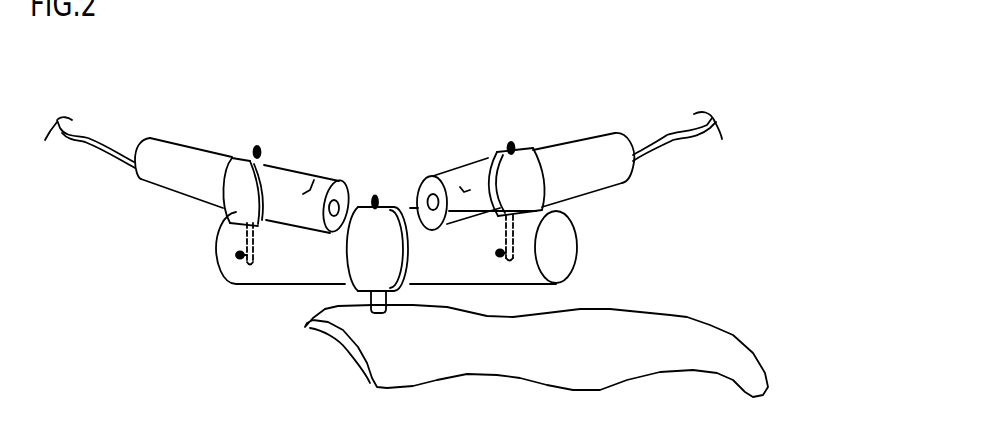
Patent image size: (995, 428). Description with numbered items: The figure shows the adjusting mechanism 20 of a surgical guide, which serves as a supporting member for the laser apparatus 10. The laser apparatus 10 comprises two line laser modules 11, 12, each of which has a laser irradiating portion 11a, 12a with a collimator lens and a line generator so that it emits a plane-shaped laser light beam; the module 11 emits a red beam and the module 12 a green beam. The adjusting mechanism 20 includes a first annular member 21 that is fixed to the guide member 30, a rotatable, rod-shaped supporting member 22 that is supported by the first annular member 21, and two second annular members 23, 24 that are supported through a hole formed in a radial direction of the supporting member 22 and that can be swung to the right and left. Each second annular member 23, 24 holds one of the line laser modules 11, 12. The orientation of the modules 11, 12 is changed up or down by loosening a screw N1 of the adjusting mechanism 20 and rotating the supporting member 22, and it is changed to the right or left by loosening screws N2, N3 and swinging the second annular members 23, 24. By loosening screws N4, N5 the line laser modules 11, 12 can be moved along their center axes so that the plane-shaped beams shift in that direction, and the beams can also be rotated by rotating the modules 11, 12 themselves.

The laser apparatus 10 is at (383, 137).
The line laser module 11 is at (163, 148).
The laser irradiating portion 11a is at (314, 180).
The line laser module 12 is at (586, 150).
The laser irradiating portion 12a is at (460, 187).
The adjusting mechanism 20 is at (398, 180).
The first annular member 21 is at (353, 258).
The supporting member 22 is at (438, 253).
The second annular member 23 is at (232, 192).
The second annular member 24 is at (538, 178).
The guide member 30 is at (691, 308).
The screw N1 is at (375, 195).
The screw N2 is at (240, 255).
The screw N3 is at (504, 253).
The screw N4 is at (257, 147).
The screw N5 is at (512, 140).